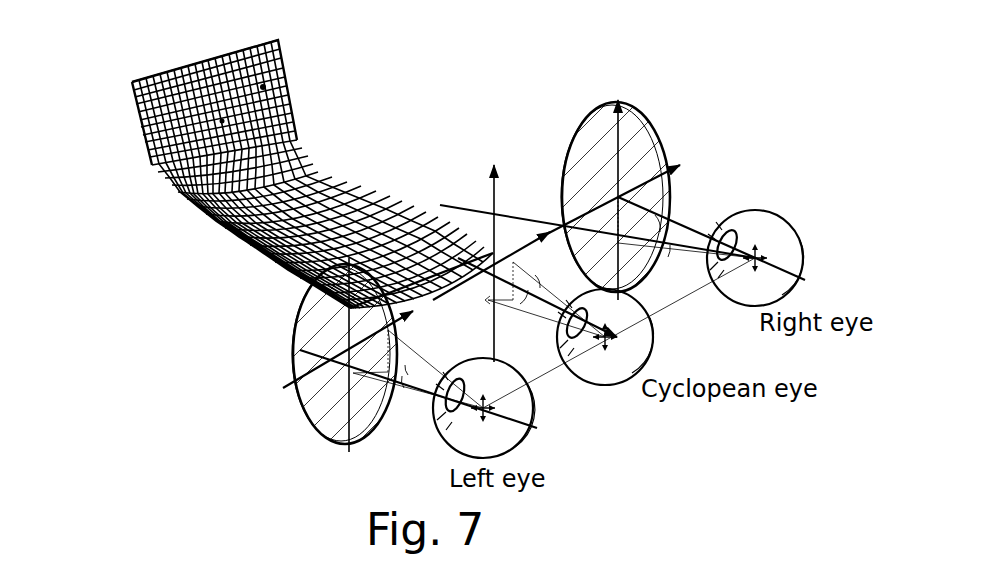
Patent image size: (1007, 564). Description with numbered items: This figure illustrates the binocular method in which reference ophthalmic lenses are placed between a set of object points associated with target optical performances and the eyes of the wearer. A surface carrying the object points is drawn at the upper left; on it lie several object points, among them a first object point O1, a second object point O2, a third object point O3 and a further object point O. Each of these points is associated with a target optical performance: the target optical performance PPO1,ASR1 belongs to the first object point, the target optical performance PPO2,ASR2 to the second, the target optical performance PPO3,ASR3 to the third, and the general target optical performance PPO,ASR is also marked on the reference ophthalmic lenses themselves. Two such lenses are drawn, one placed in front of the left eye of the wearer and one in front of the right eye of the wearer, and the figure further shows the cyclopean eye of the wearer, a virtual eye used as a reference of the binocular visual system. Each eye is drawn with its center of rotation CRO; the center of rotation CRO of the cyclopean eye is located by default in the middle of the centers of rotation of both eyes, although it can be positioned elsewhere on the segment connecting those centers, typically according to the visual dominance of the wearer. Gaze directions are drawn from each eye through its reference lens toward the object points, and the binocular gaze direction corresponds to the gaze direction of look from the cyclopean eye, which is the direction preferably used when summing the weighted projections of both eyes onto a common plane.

The object point O is at (312, 174).
The first object point O1 is at (206, 108).
The second object point O2 is at (204, 186).
The third object point O3 is at (244, 76).
The target optical performance of first object point PPO1,ASR1 is at (173, 132).
The target optical performance of second object point PPO2,ASR2 is at (205, 198).
The target optical performance of third object point PPO3,ASR3 is at (373, 30).
The target optical performance PPO,ASR is at (293, 137).
The center of rotation of the eye CRO is at (618, 334).